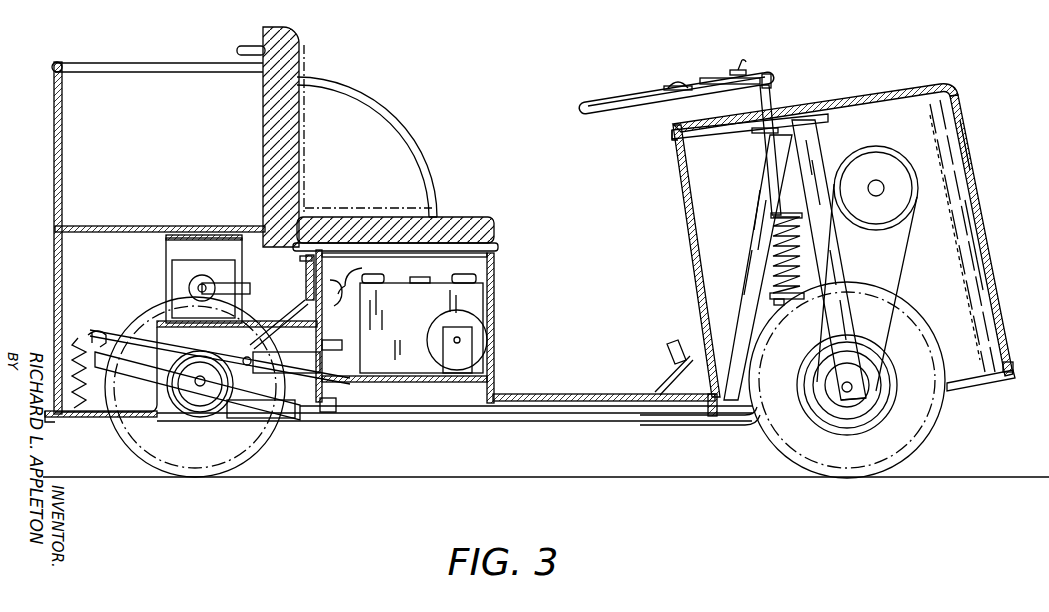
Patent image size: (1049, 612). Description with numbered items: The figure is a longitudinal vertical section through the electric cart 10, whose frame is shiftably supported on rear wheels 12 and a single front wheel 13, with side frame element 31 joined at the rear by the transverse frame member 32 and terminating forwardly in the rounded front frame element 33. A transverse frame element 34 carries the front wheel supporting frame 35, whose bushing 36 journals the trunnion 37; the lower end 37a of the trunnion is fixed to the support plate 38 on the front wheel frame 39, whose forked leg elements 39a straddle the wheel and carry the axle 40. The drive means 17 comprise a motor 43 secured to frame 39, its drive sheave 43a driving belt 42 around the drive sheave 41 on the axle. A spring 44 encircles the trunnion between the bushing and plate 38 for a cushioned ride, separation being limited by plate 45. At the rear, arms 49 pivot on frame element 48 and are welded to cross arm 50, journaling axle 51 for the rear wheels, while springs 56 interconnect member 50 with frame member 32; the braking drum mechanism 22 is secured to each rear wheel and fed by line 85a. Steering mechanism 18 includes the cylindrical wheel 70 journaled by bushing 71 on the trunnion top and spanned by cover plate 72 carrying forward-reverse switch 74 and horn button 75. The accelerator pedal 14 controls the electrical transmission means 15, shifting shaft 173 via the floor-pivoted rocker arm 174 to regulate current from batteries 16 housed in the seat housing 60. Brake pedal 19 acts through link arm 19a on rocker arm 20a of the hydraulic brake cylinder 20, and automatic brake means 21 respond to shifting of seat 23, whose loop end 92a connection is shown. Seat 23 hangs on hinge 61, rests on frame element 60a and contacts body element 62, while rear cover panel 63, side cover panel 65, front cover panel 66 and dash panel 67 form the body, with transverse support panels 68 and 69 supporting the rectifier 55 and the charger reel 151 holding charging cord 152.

The electric cart 10 is at (958, 50).
The rear wheel 12 is at (265, 462).
The front wheel 13 is at (940, 465).
The accelerator pedal 14 is at (690, 360).
The electrical transmission means 15 is at (262, 408).
The battery 16 is at (486, 291).
The drive means 17 is at (912, 150).
The steering mechanism 18 is at (614, 97).
The brake pedal 19 is at (668, 343).
The link arm 19a is at (433, 394).
The hydraulic brake cylinder 20 is at (281, 362).
The rocker arm 20a is at (340, 346).
The automatic brake means 21 is at (300, 270).
The braking drum mechanism 22 is at (200, 384).
The seat 23 is at (450, 218).
The side frame element 31 is at (97, 420).
The transverse frame member 32 is at (45, 423).
The rounded front frame element 33 is at (1012, 362).
The transverse frame element 34 is at (722, 416).
The front wheel supporting frame 35 is at (725, 212).
The bushing 36 is at (762, 150).
The trunnion 37 is at (776, 108).
The lower end of trunnion 37a is at (780, 262).
The support plate 38 is at (812, 292).
The front wheel frame 39 is at (820, 140).
The forked leg element 39a is at (868, 402).
The axle 40 is at (843, 398).
The drive sheave 41 is at (875, 388).
The belt 42 is at (905, 272).
The motor 43 is at (885, 150).
The drive sheave of motor 43a is at (905, 190).
The spring 44 is at (785, 232).
The plate 45 is at (832, 112).
The transversely extending frame element 48 is at (328, 412).
The rearwardly projecting arm 49 is at (108, 328).
The cross arm 50 is at (96, 340).
The axle 51 is at (212, 400).
The rectifier 55 is at (190, 258).
The spring 56 is at (66, 360).
The seat housing 60 is at (497, 360).
The frame element 60a is at (345, 264).
The hinge 61 is at (500, 258).
The body element 62 is at (185, 227).
The rear cover panel 63 is at (52, 205).
The side cover panel 65 is at (345, 125).
The front cover panel 66 is at (992, 208).
The dash panel 67 is at (905, 90).
The transverse support panel 68 is at (150, 300).
The transverse support panel 69 is at (334, 302).
The cylindrical wheel 70 is at (648, 100).
The bushing 71 is at (774, 82).
The cover plate 72 is at (705, 86).
The forward-reverse switch 74 is at (740, 68).
The horn button 75 is at (677, 82).
The line 85a is at (172, 410).
The loop end 92a is at (310, 288).
The reel 151 is at (432, 318).
The charging cord 152 is at (492, 322).
The shaft 173 is at (518, 415).
The rocker arm 174 is at (668, 418).